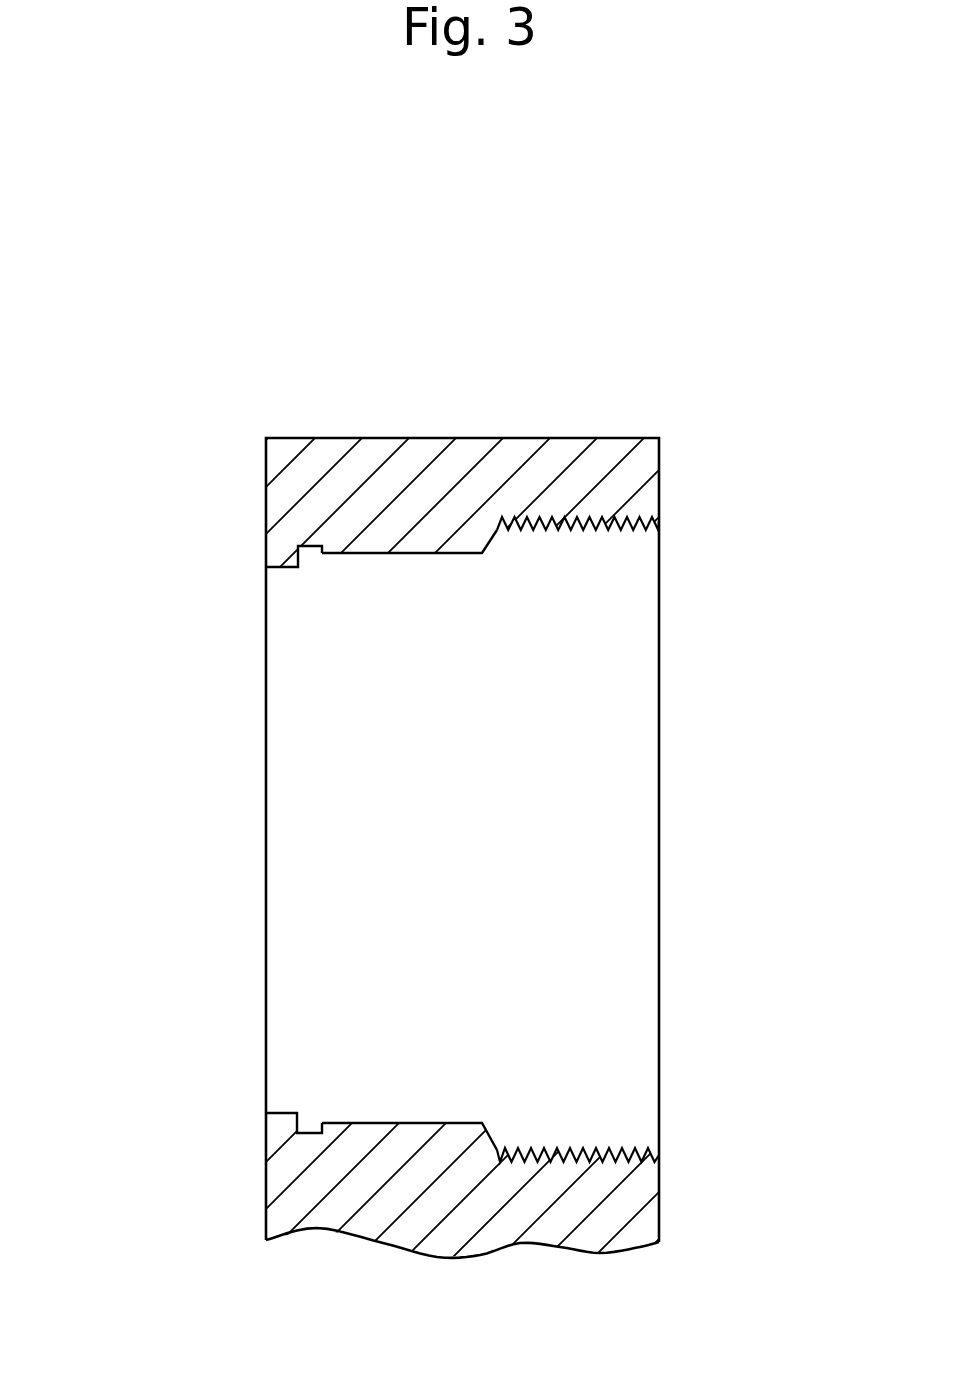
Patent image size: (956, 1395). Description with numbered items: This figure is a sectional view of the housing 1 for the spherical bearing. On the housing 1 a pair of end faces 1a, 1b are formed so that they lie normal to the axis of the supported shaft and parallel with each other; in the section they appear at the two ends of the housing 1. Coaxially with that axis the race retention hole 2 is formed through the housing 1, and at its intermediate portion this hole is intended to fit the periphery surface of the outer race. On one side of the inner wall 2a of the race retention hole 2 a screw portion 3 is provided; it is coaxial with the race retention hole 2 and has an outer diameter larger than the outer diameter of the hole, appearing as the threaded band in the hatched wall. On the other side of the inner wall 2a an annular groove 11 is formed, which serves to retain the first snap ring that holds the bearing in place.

The housing 1 is at (509, 742).
The end face 1a is at (672, 1164).
The end face 1b is at (211, 1174).
The race retention hole 2 is at (587, 833).
The inner wall 2a is at (450, 1080).
The screw portion 3 is at (670, 529).
The annular groove 11 is at (187, 548).